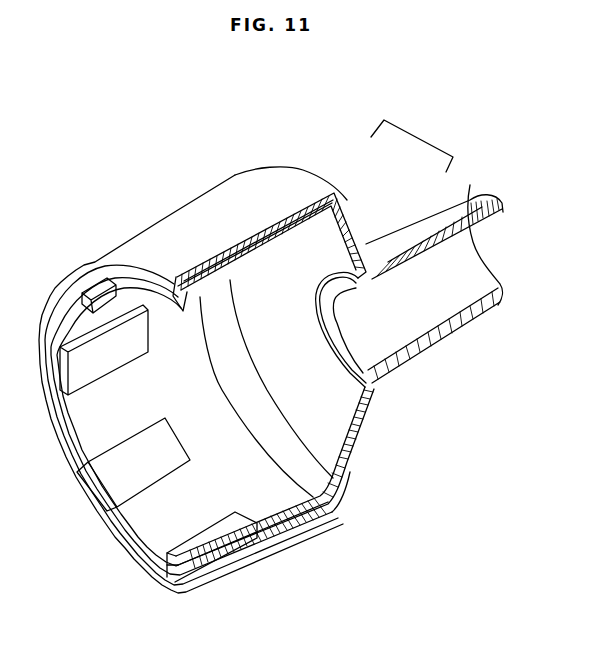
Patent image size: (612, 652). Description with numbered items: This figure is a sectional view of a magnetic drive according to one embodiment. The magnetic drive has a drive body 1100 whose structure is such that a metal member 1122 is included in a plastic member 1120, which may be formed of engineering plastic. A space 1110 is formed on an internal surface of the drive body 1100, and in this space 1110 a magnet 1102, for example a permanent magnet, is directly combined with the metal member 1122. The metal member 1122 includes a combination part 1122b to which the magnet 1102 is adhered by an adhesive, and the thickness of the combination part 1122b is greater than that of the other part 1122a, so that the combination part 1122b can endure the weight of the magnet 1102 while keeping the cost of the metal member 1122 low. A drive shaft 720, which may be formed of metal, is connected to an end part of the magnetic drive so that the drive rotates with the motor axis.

The drive body 1100 is at (416, 125).
The space 1110 is at (193, 380).
The magnet 1102 is at (246, 256).
The plastic member 1120 is at (377, 286).
The metal member 1122 is at (280, 362).
The other part 1122a is at (290, 207).
The combination part 1122b is at (211, 253).
The drive shaft 720 is at (434, 270).